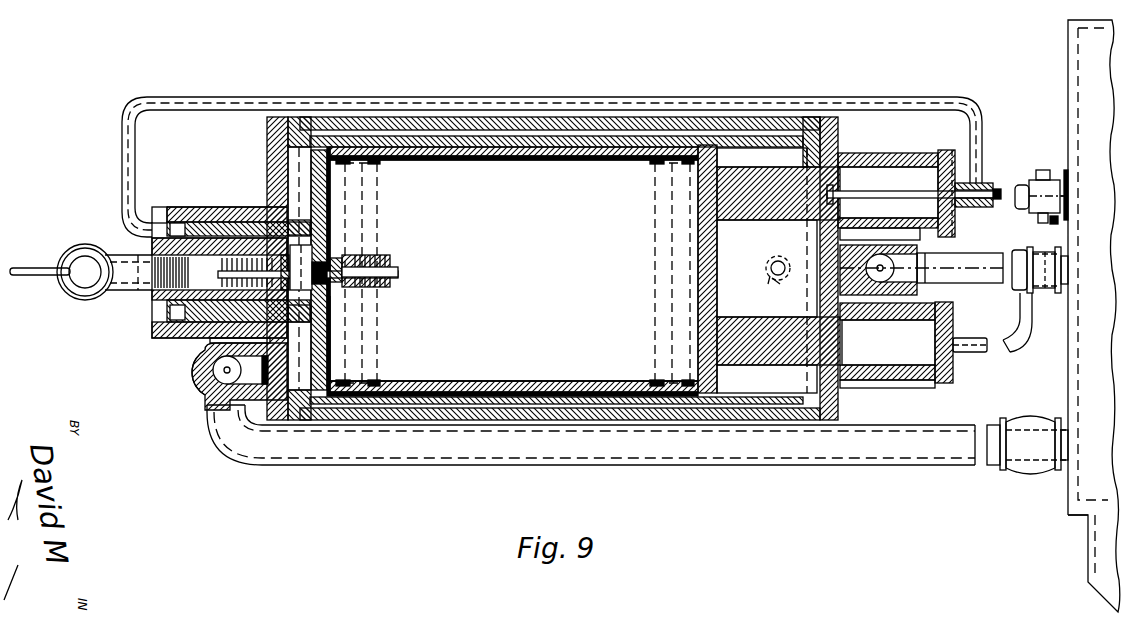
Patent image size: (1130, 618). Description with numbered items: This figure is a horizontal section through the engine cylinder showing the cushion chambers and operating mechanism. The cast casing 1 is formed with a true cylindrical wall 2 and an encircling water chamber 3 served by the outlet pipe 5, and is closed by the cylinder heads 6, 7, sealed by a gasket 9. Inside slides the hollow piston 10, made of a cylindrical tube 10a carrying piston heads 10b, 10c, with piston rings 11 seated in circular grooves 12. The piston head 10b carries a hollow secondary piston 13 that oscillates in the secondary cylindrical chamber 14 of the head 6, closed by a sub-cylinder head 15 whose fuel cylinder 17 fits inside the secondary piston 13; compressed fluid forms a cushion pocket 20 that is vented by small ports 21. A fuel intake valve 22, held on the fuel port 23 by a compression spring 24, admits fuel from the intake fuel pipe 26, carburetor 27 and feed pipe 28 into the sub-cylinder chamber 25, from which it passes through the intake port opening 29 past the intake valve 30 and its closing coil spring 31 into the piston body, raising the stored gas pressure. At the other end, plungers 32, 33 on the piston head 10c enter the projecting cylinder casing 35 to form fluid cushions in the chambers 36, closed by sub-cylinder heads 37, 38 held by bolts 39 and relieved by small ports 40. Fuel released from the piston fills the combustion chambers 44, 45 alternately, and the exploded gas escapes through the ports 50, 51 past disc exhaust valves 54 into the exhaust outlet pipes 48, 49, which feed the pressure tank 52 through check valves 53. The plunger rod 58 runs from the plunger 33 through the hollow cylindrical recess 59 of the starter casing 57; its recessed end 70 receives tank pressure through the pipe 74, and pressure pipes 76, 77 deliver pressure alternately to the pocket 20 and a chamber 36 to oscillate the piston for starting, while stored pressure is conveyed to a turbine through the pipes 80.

The casing 1 is at (555, 122).
The cylindrical wall 2 is at (592, 142).
The water chamber 3 is at (637, 152).
The outlet pipe 5 is at (766, 268).
The cylinder head 6 is at (267, 157).
The cylinder head 7 is at (838, 119).
The gasket 9 is at (291, 118).
The piston 10 is at (520, 135).
The cylindrical tube 10a is at (552, 386).
The piston head 10b is at (332, 325).
The piston head 10c is at (697, 344).
The piston rings 11 is at (370, 205).
The circular grooves 12 is at (378, 162).
The secondary piston 13 is at (213, 210).
The secondary cylindrical chamber 14 is at (178, 207).
The sub-cylinder head 15 is at (150, 243).
The fuel cylinder 17 is at (196, 225).
The pocket 20 is at (157, 330).
The small ports 21 is at (160, 310).
The fuel intake valve 22 is at (212, 352).
The fuel port 23 is at (206, 372).
The compression spring 24 is at (210, 341).
The sub-cylinder chamber 25 is at (356, 282).
The intake fuel pipe 26 is at (140, 253).
The carburetor 27 is at (62, 287).
The feed pipe 28 is at (25, 276).
The intake port opening 29 is at (340, 252).
The intake valve 30 is at (345, 263).
The closing coil spring 31 is at (368, 258).
The cylindrical plunger 32 is at (750, 311).
The cylindrical plunger 33 is at (760, 222).
The cylinder casing 35 is at (882, 158).
The chambers 36 is at (890, 185).
The sub-cylinder head 37 is at (953, 362).
The sub-cylinder head 38 is at (955, 223).
The bolts 39 is at (965, 155).
The small ports 40 is at (953, 324).
The combustion chamber 44 is at (742, 165).
The combustion chamber 45 is at (296, 191).
The exhaust outlet pipe 48 is at (1000, 289).
The exhaust outlet pipe 49 is at (952, 466).
The port 50 is at (780, 281).
The port 51 is at (348, 295).
The pressure tank 52 is at (1070, 500).
The check valves 53 is at (1045, 294).
The disc exhaust valves 54 is at (222, 383).
The starter casing 57 is at (1032, 221).
The plunger rod 58 is at (895, 197).
The hollow cylindrical recess 59 is at (982, 183).
The recessed end 70 is at (1006, 185).
The pipe 74 is at (1065, 178).
The pressure pipe 76 is at (1033, 185).
The pressure pipe 77 is at (1031, 333).
The pipes 80 is at (1088, 531).